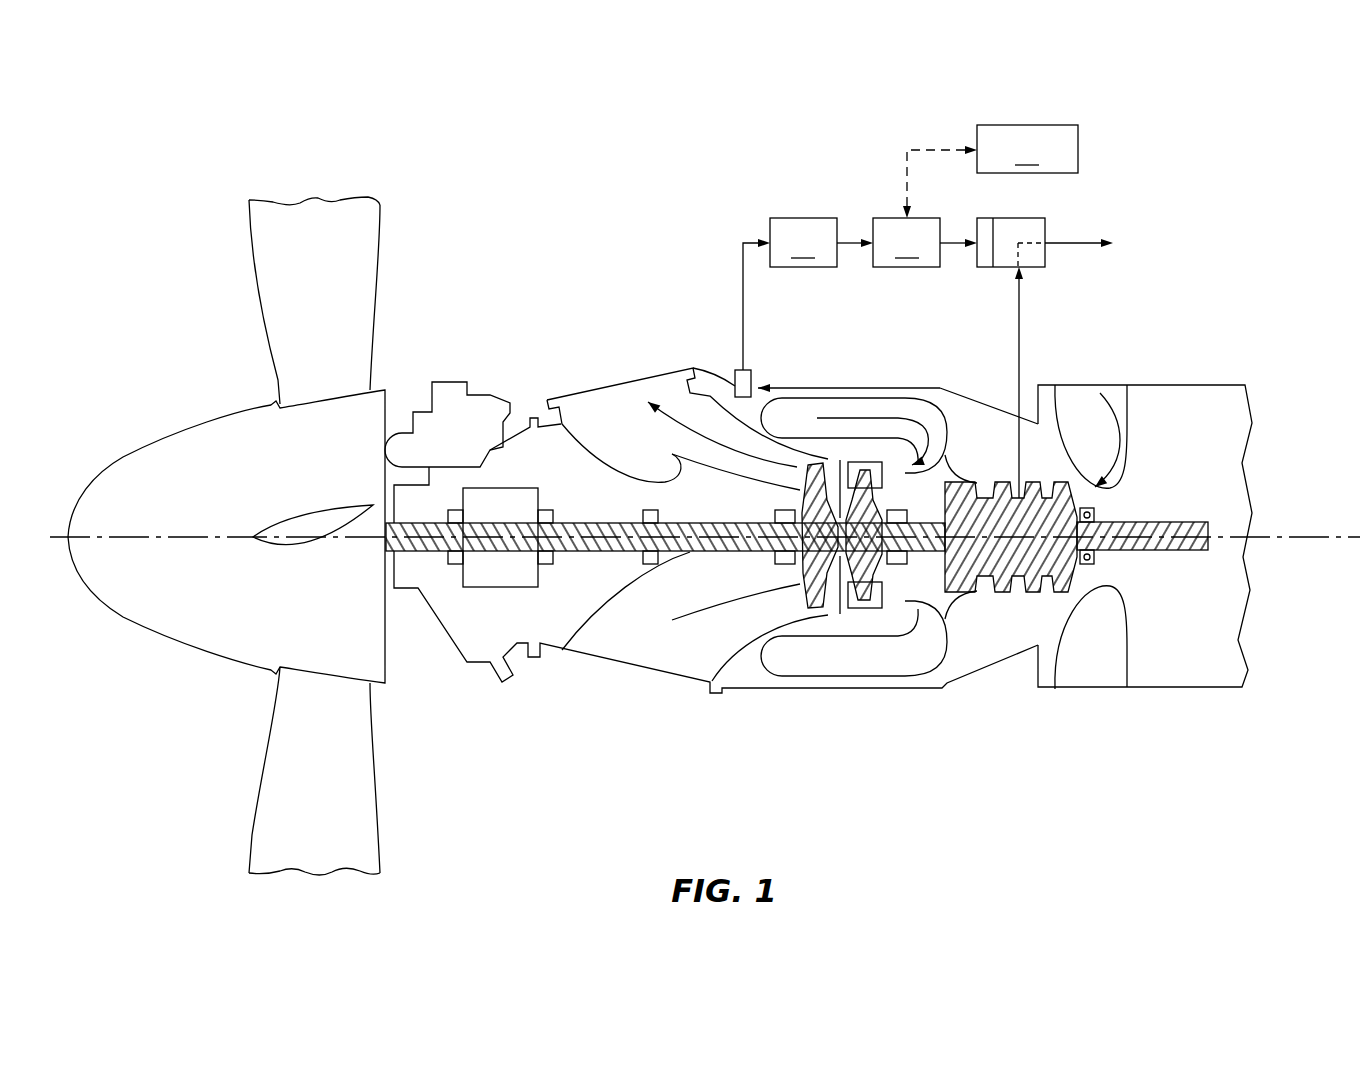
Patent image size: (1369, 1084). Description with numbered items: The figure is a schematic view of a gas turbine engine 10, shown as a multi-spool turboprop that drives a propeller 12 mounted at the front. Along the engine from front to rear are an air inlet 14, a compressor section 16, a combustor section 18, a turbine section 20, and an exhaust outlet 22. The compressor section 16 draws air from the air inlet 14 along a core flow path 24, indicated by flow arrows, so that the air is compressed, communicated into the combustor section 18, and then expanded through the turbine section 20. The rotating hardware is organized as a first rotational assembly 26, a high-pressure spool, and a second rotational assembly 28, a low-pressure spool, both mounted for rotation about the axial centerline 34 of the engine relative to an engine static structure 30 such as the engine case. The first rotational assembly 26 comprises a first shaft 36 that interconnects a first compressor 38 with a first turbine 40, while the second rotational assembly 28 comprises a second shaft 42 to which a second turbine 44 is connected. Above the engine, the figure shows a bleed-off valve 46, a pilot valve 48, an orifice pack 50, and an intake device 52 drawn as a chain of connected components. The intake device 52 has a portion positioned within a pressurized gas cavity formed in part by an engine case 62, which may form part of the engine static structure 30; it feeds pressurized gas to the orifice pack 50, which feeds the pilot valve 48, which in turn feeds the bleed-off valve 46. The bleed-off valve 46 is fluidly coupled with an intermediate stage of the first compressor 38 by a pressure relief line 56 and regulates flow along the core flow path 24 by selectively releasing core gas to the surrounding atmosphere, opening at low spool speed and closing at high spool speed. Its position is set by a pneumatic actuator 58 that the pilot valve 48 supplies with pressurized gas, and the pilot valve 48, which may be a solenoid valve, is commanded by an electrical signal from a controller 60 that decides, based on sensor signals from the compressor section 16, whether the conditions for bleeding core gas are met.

The gas turbine engine 10 is at (1280, 158).
The propeller 12 is at (232, 663).
The air inlet 14 is at (1112, 374).
The compressor section 16 is at (992, 613).
The combustor section 18 is at (920, 667).
The turbine section 20 is at (793, 602).
The exhaust outlet 22 is at (606, 366).
The core flow path 24 is at (723, 447).
The first rotational assembly 26 is at (1122, 508).
The second rotational assembly 28 is at (740, 565).
The engine static structure 30 is at (897, 690).
The axial centerline 34 is at (1336, 552).
The first shaft 36 is at (940, 495).
The first compressor 38 is at (1030, 557).
The first turbine 40 is at (863, 557).
The second shaft 42 is at (682, 607).
The second turbine 44 is at (830, 606).
The bleed-off valve 46 is at (1045, 228).
The pilot valve 48 is at (925, 242).
The orifice pack 50 is at (821, 242).
The intake device 52 is at (733, 374).
The pressure relief line 56 is at (1020, 313).
The pneumatic actuator 58 is at (985, 255).
The controller 60 is at (990, 171).
The engine case 62 is at (797, 388).